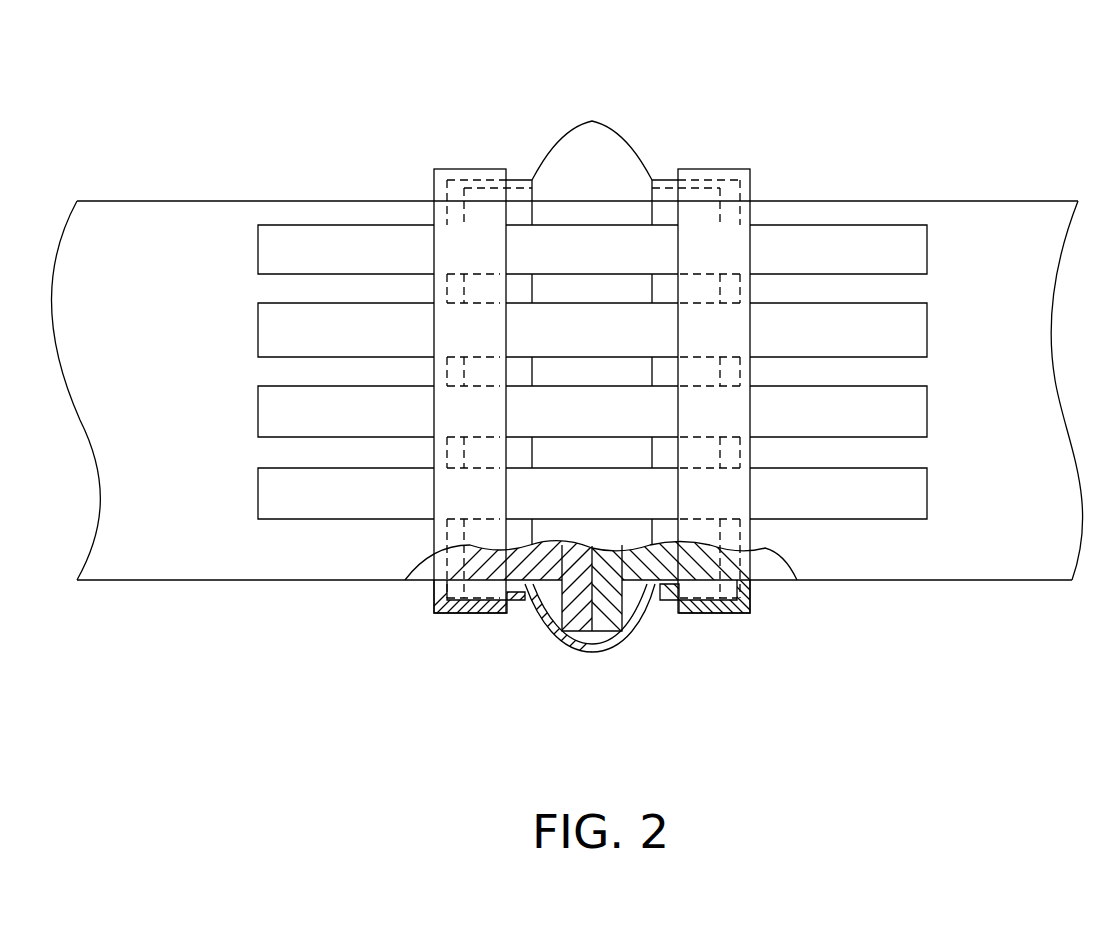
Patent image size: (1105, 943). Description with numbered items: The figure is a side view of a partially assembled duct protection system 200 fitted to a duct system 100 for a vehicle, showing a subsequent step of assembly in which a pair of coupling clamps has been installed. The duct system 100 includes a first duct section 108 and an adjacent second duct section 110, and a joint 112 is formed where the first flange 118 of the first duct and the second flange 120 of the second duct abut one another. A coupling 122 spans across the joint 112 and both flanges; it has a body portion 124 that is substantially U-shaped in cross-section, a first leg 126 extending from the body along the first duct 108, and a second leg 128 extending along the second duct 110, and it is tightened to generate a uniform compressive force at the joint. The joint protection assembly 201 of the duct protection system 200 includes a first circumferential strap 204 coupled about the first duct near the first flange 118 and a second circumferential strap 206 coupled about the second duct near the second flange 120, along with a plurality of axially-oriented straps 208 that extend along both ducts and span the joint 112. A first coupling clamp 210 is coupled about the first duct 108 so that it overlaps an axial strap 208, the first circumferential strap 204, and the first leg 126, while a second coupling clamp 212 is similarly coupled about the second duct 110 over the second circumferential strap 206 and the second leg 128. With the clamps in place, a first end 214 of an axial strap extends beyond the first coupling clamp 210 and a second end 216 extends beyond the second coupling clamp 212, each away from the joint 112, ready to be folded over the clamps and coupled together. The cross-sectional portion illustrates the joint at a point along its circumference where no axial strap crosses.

The duct system 100 is at (302, 101).
The duct protection system 200 is at (655, 104).
The first duct section 108 is at (150, 201).
The second duct section 110 is at (1000, 201).
The joint protection assembly 201 is at (198, 353).
The axial straps 208 is at (937, 225).
The first end 214 is at (278, 503).
The second end 216 is at (893, 505).
The first coupling clamp 210 is at (455, 169).
The second coupling clamp 212 is at (716, 169).
The first circumferential strap 204 is at (447, 212).
The second circumferential strap 206 is at (740, 212).
The coupling 122 is at (593, 121).
The second flange 120 is at (640, 622).
The first flange 118 is at (558, 635).
The body portion 124 is at (578, 655).
The first leg 126 is at (514, 615).
The second leg 128 is at (672, 612).
The joint 112 is at (608, 672).